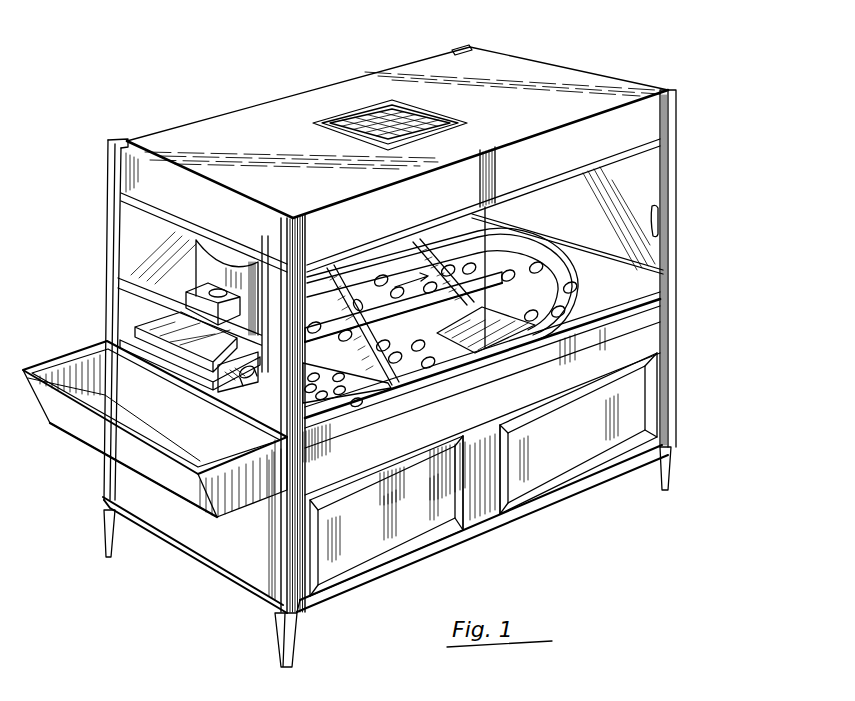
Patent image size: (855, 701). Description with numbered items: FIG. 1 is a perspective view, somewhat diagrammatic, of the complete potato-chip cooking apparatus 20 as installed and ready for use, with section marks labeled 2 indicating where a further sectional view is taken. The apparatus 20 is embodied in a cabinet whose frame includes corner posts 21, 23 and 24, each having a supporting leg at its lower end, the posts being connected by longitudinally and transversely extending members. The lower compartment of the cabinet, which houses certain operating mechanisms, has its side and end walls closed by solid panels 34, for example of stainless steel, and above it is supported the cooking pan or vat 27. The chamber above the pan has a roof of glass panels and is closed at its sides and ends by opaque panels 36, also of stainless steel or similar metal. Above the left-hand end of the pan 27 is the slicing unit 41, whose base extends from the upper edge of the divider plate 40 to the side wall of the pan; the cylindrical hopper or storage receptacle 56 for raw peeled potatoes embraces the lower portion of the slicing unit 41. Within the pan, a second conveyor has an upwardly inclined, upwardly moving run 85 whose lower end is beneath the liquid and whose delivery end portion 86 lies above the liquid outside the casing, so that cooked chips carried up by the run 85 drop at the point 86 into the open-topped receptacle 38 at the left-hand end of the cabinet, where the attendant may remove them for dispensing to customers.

The apparatus 20 is at (591, 58).
The corner post 21 is at (108, 190).
The corner post 23 is at (676, 141).
The corner post 24 is at (488, 31).
The cooking pan or vat 27 is at (555, 250).
The solid panels 34 is at (412, 528).
The opaque panels 36 is at (140, 153).
The open-topped receptacle 38 is at (251, 494).
The divider plate 40 is at (392, 300).
The slicing unit 41 is at (162, 270).
The hopper or storage receptacle 56 is at (222, 240).
The upwardly moving run 85 is at (345, 402).
The delivery end portion 86 is at (240, 393).
The section line 2- 2 is at (708, 245).